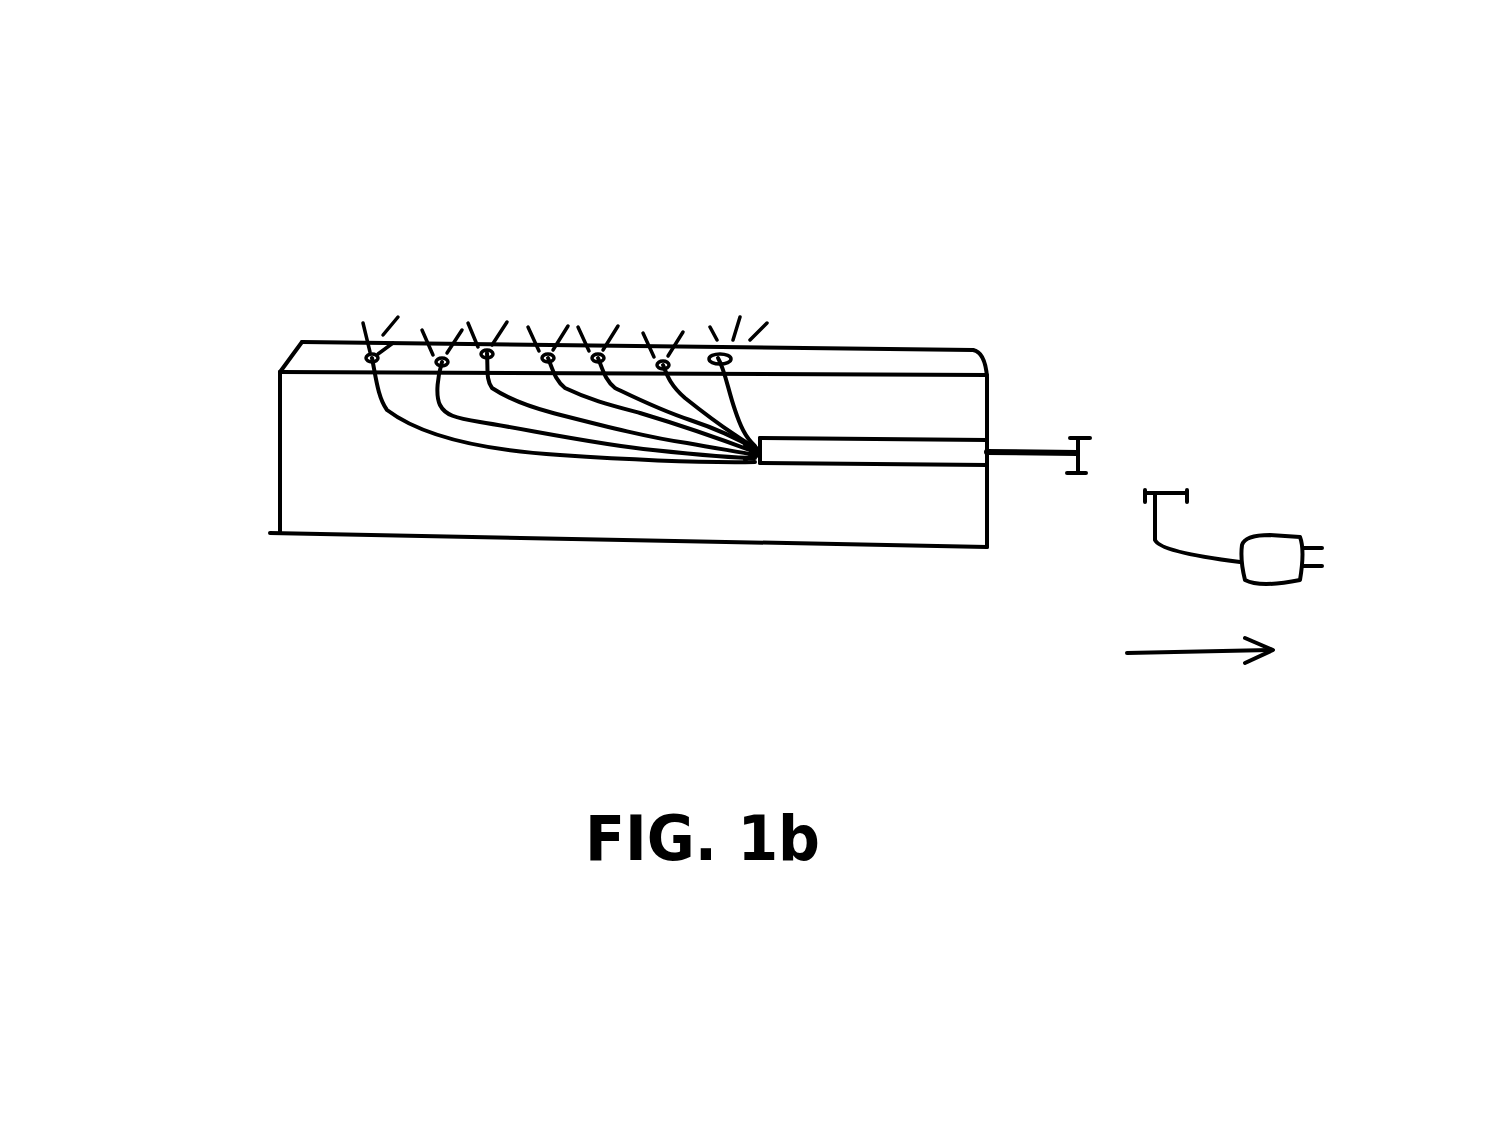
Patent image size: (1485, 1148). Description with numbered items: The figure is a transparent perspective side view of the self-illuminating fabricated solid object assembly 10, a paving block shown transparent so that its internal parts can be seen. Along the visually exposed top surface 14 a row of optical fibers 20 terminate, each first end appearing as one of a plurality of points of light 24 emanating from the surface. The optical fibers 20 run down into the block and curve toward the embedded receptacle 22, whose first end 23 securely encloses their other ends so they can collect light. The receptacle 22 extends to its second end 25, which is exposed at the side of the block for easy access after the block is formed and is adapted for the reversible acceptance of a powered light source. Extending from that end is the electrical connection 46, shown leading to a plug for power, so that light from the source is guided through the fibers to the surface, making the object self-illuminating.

The self-illuminating fabricated solid object assembly 10 is at (225, 229).
The visible surface 14 is at (320, 360).
The optical fibers 20 is at (387, 410).
The receptacle 22 is at (866, 440).
The first end of receptacle 23 is at (762, 440).
The points of light 24 is at (720, 354).
The second end of receptacle 25 is at (975, 467).
The electrical connection 46 is at (1028, 447).